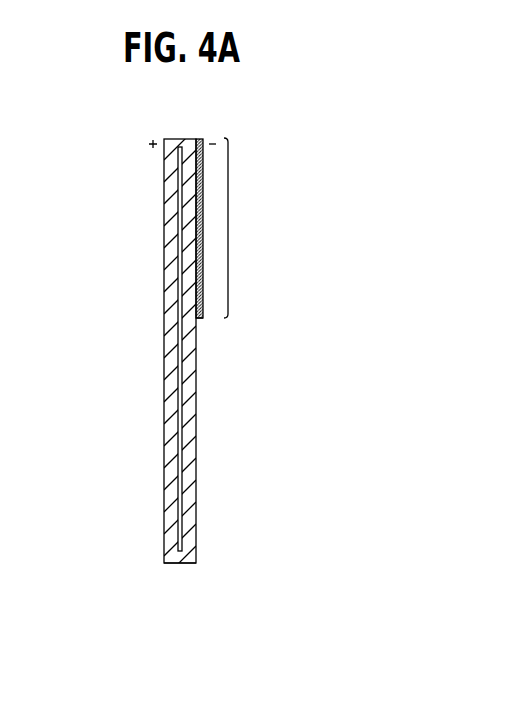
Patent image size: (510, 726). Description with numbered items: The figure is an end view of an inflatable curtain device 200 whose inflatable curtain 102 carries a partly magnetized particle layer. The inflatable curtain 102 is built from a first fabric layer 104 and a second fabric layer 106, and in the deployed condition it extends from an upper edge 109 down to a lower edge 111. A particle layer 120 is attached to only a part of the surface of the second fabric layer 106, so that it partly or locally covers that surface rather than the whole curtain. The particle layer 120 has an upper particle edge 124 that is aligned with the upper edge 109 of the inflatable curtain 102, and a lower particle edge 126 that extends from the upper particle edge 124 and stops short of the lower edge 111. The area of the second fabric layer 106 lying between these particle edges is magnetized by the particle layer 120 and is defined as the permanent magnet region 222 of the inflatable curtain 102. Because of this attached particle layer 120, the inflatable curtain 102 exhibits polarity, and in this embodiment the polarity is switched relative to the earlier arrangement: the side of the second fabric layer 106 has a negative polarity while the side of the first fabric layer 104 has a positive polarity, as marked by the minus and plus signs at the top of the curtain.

The inflatable curtain device 200 is at (226, 348).
The inflatable curtain 102 is at (165, 408).
The first fabric layer 104 is at (174, 326).
The second fabric layer 106 is at (190, 388).
The upper edge 109 is at (165, 138).
The lower edge 111 is at (178, 565).
The particle layer 120 is at (204, 262).
The upper particle edge 124 is at (201, 138).
The lower particle edge 126 is at (203, 321).
The permanent magnet region 222 is at (228, 226).